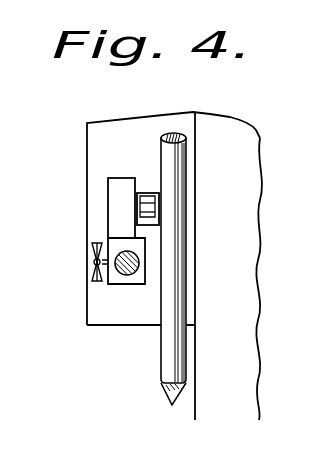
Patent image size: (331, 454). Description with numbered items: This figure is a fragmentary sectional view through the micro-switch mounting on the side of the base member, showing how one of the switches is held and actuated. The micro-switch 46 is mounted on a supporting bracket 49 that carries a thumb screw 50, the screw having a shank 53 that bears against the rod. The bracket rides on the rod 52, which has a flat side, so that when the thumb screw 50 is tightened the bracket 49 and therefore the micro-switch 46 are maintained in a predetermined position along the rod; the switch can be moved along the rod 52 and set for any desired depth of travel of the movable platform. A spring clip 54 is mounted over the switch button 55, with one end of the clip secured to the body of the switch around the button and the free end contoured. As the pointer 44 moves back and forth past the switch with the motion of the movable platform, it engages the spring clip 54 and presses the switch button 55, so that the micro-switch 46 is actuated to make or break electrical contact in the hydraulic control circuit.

The pointer 44 is at (170, 254).
The micro-switch 46 is at (120, 191).
The supporting bracket 49 is at (108, 282).
The thumb screw 50 is at (93, 263).
The rod 52 is at (126, 275).
The shaft 53 is at (97, 280).
The spring clip 54 is at (153, 209).
The switch button 55 is at (153, 205).